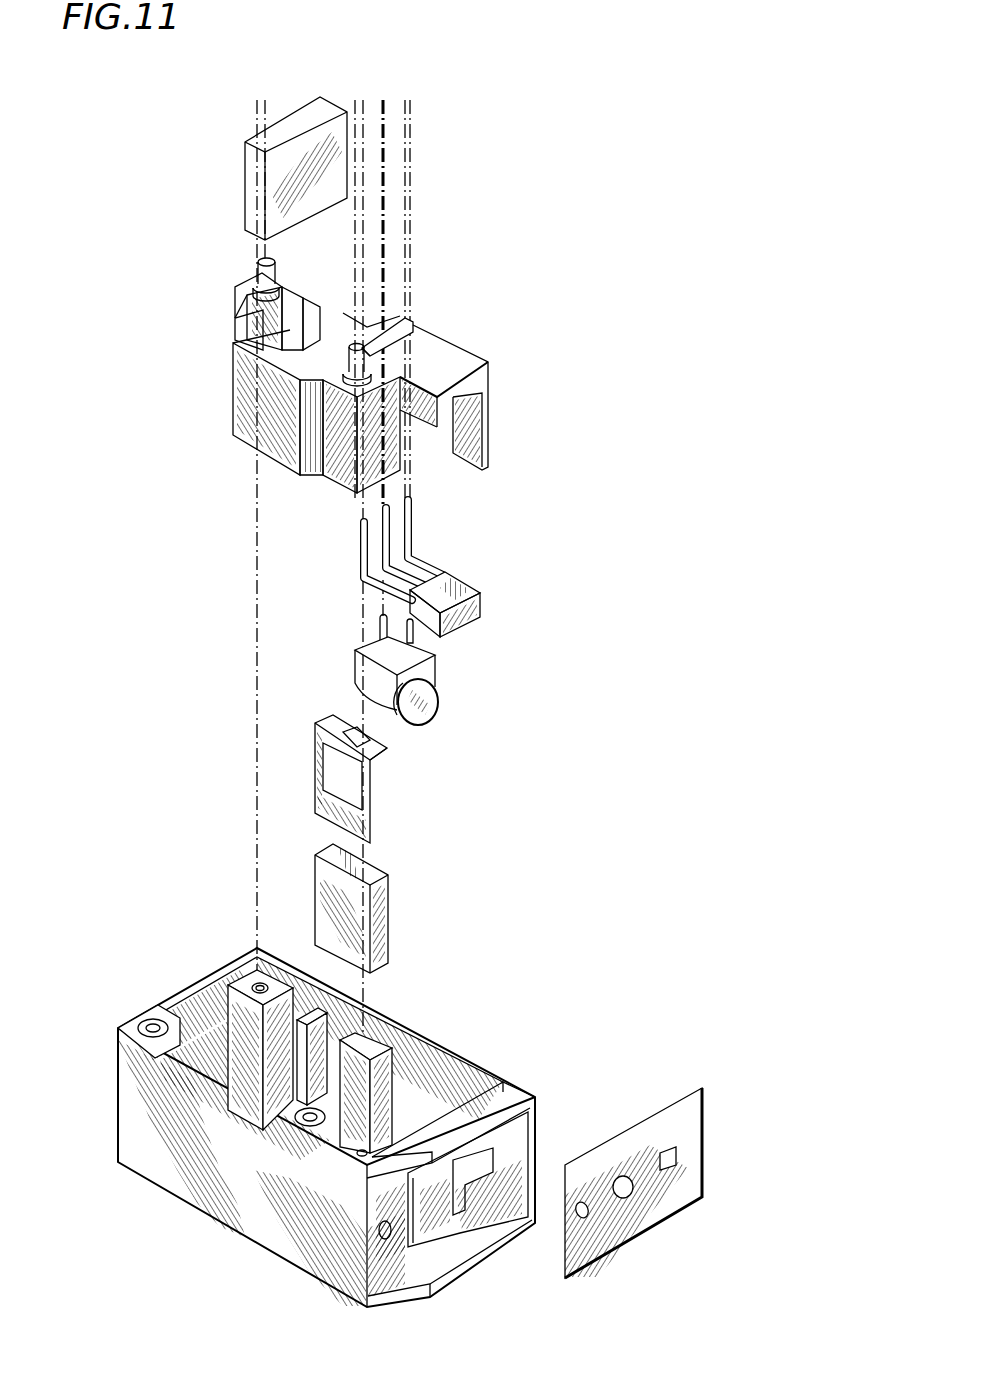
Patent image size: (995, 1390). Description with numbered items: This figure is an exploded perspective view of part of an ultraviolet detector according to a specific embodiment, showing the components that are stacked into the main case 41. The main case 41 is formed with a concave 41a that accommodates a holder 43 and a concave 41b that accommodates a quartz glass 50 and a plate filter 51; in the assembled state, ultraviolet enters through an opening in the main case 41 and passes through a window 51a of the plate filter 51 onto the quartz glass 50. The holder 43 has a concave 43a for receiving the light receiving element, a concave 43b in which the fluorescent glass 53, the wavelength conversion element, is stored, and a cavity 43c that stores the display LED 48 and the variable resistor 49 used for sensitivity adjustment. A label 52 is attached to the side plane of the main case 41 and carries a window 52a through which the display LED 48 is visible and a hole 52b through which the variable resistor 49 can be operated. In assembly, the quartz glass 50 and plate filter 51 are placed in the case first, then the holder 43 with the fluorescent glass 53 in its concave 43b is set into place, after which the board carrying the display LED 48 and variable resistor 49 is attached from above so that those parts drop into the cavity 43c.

The main case 41 is at (180, 988).
The concave 41a is at (280, 1093).
The concave 41b is at (372, 1036).
The holder 43 is at (453, 372).
The concave 43a is at (245, 307).
The concave 43b is at (250, 343).
The cavity 43c is at (378, 437).
The display LED 48 is at (445, 573).
The variable resistor 49 is at (440, 707).
The quartz glass 50 is at (390, 900).
The plate filter 51 is at (390, 781).
The window 51a is at (343, 780).
The label 52 is at (633, 1165).
The window 52a is at (673, 1147).
The hole 52b is at (630, 1173).
The fluorescent glass 53 is at (243, 187).